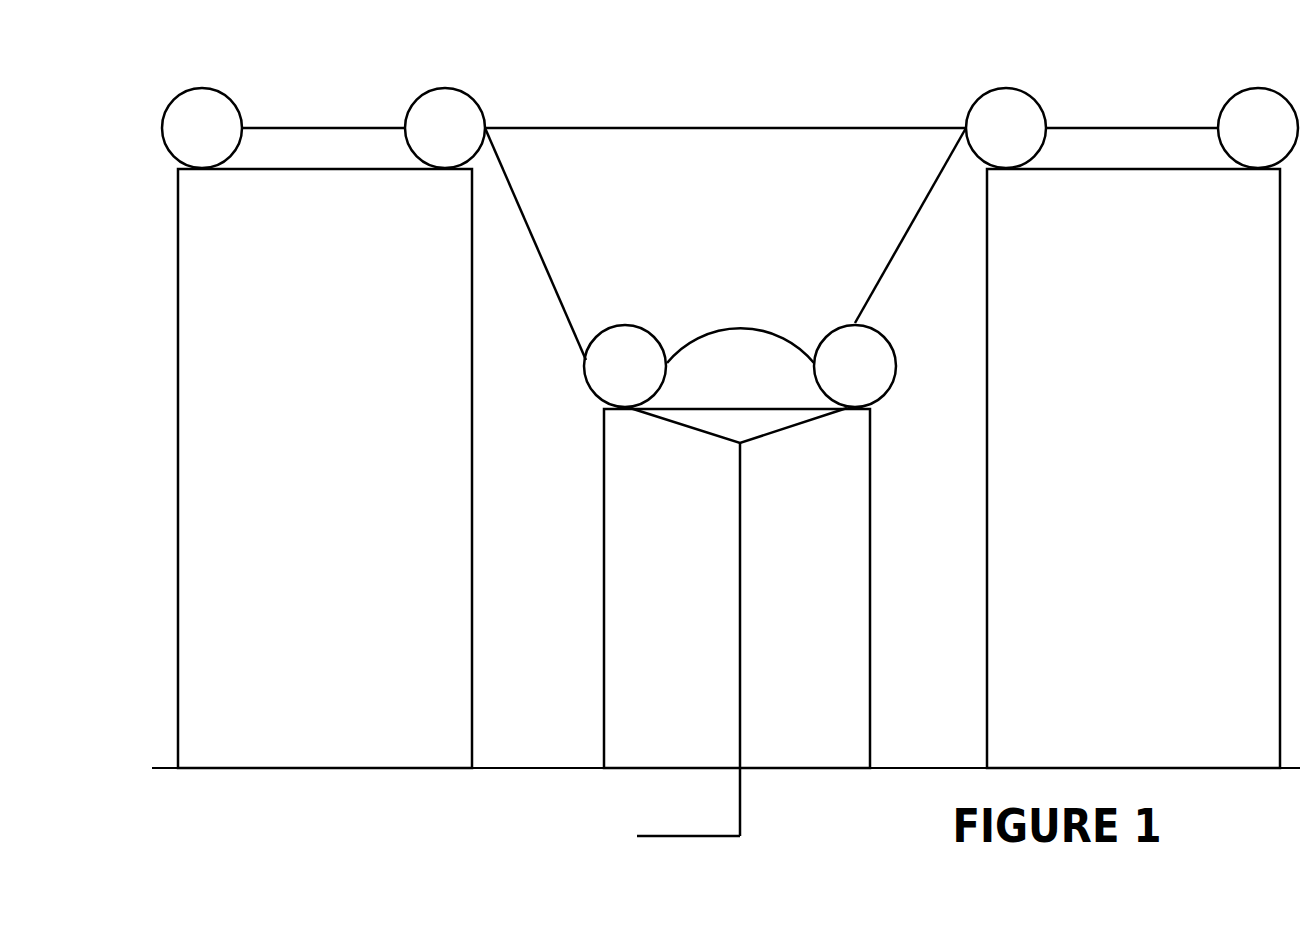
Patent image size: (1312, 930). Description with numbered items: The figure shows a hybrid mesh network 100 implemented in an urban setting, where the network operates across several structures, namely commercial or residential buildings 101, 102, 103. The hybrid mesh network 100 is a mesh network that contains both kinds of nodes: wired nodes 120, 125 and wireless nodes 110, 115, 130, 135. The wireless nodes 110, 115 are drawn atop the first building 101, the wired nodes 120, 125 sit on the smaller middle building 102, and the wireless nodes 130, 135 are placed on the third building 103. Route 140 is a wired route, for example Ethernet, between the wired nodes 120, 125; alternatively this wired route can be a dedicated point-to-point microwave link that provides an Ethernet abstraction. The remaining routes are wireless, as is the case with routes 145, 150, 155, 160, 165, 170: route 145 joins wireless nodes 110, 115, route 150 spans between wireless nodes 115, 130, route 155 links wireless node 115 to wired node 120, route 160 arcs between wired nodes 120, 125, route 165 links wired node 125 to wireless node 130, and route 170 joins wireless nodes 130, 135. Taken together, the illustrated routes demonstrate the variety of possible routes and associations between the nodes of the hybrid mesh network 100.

The hybrid mesh network 100 is at (726, 387).
The building 101 is at (325, 468).
The building 102 is at (737, 588).
The building 103 is at (1133, 468).
The wireless node 110 is at (202, 97).
The wireless node 115 is at (445, 97).
The wired node 120 is at (625, 332).
The wired node 125 is at (889, 352).
The wireless node 130 is at (1006, 97).
The wireless node 135 is at (1258, 97).
The route 140 is at (740, 498).
The route 145 is at (323, 105).
The route 150 is at (725, 109).
The route 155 is at (541, 244).
The route 160 is at (740, 326).
The route 165 is at (910, 225).
The route 170 is at (1132, 109).